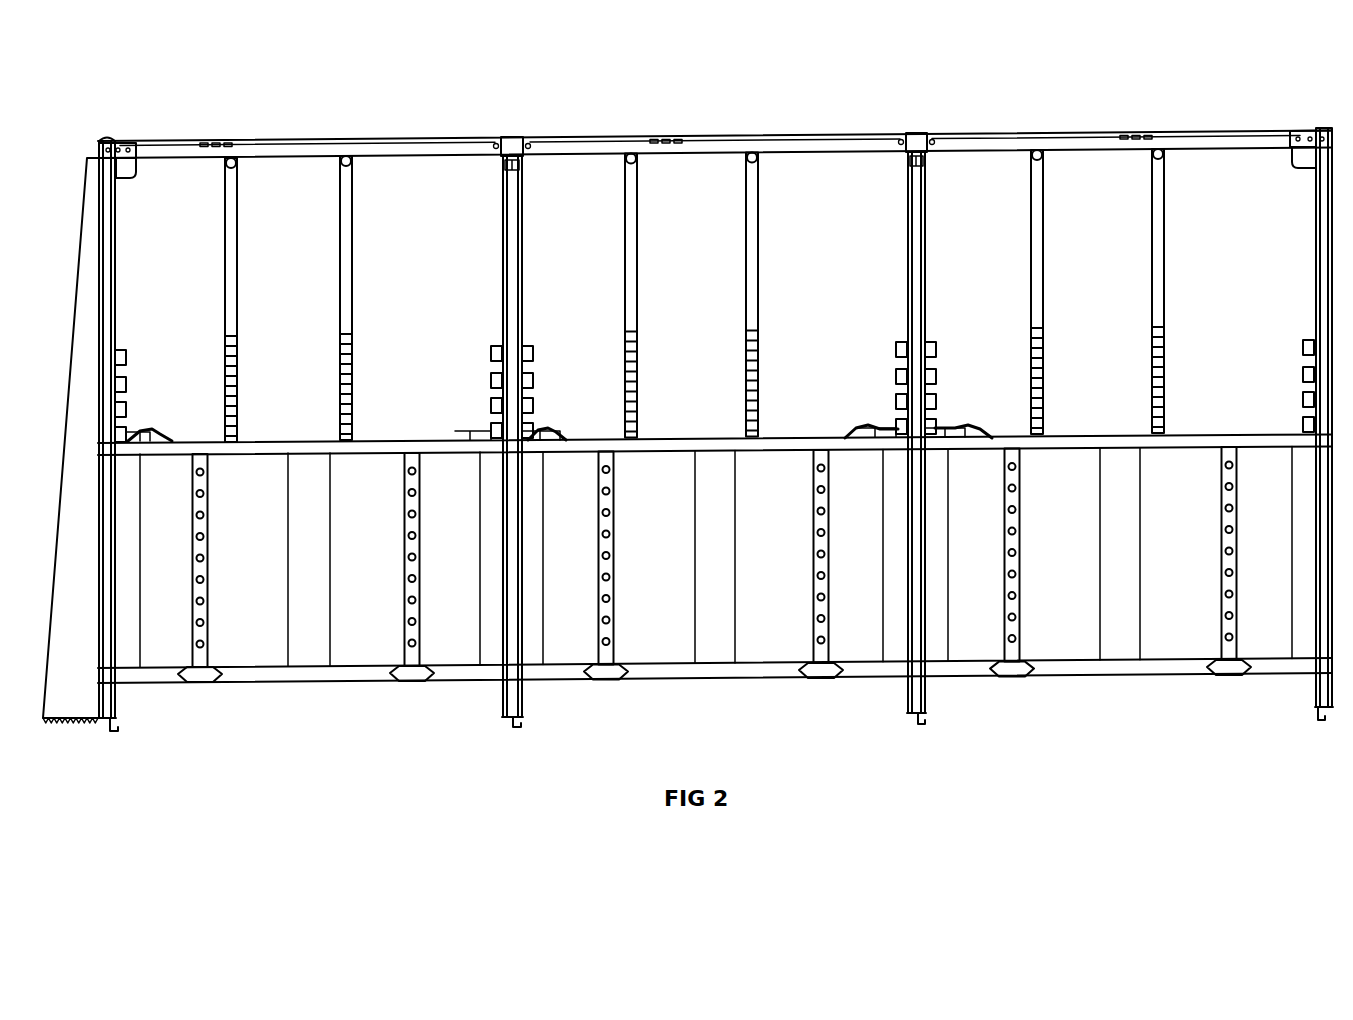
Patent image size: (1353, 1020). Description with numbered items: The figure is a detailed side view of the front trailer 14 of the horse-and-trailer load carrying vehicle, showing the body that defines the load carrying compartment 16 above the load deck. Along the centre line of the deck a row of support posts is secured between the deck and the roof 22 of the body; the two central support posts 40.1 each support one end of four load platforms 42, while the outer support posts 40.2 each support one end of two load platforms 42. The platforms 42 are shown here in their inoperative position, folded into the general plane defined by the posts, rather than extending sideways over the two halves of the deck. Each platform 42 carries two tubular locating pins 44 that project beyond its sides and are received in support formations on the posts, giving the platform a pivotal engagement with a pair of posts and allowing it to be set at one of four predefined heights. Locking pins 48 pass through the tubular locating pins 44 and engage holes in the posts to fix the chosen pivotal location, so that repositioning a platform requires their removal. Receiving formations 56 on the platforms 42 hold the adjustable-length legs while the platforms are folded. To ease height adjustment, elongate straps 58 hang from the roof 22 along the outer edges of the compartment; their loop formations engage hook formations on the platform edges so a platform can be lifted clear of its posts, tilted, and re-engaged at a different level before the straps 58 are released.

The front trailer 14 is at (702, 138).
The load carrying compartment 16 is at (827, 190).
The roof 22 is at (1035, 138).
The central support posts 40.1 is at (512, 690).
The outer support posts 40.2 is at (112, 643).
The load platform 42 is at (300, 622).
The tubular locating pin 44 is at (128, 437).
The locking pin 48 is at (140, 430).
The receiving formation 56 is at (205, 592).
The elongate strap 58 is at (346, 268).